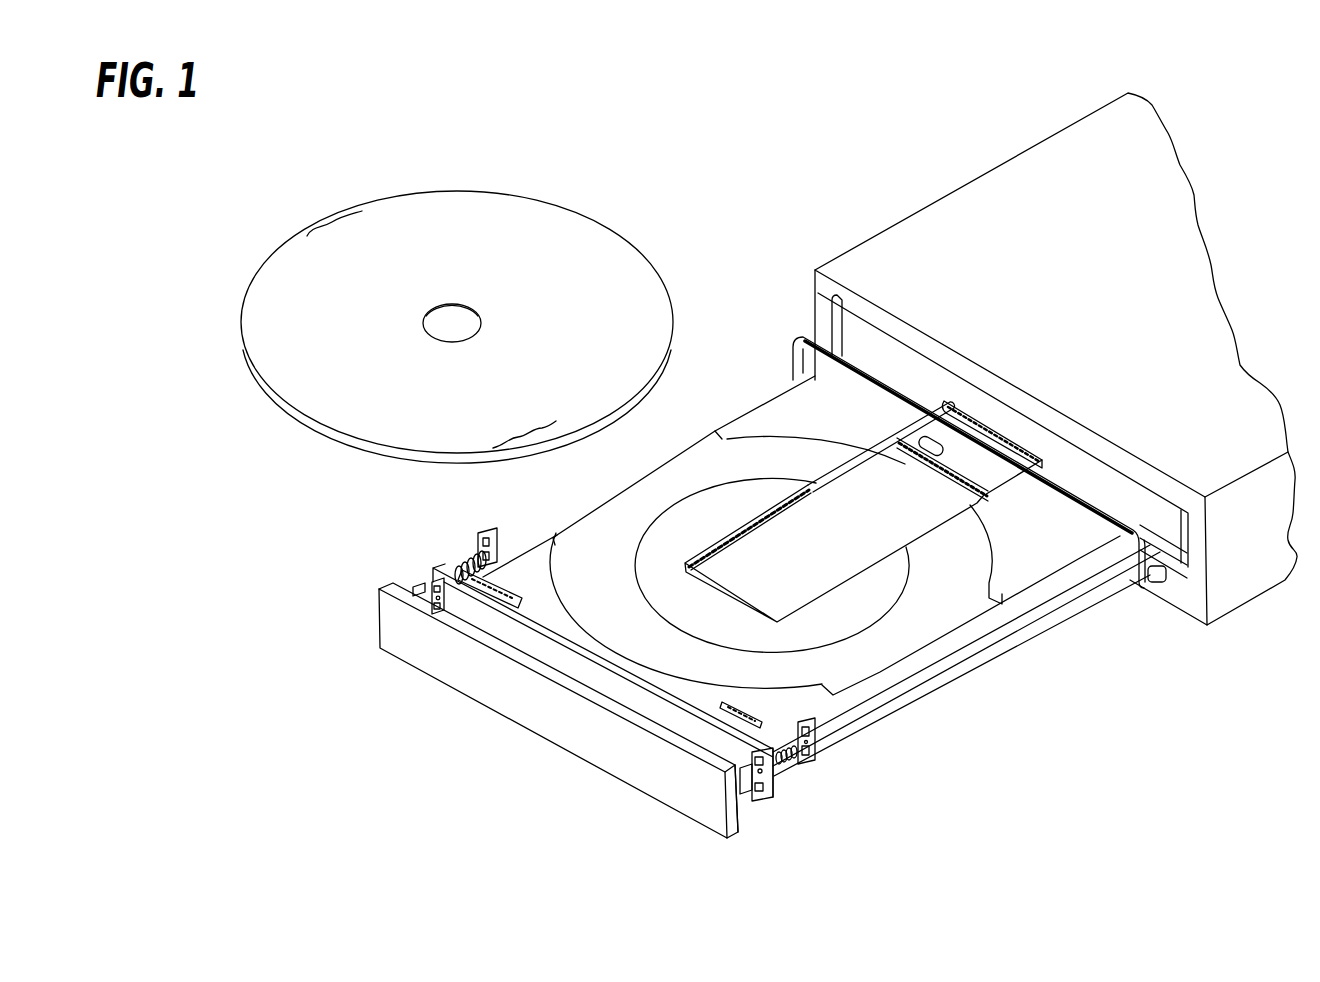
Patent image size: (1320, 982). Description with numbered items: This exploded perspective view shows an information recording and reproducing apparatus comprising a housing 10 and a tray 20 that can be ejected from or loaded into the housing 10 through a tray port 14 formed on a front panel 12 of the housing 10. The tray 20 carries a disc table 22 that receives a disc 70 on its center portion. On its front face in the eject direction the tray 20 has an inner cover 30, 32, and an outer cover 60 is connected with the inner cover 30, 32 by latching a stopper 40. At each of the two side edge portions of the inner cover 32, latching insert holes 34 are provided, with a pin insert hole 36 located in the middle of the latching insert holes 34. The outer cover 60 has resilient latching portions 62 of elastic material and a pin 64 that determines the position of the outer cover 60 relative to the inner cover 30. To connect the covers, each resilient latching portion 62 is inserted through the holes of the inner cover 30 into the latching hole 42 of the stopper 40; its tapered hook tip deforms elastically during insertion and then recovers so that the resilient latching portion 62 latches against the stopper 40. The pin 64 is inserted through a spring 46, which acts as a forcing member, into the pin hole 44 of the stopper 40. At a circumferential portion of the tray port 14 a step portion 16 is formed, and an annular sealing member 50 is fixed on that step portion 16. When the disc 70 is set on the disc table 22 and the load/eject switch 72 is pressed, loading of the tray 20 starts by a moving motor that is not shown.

The housing 10 is at (993, 196).
The front panel 12 is at (1190, 612).
The tray port 14 is at (862, 321).
The step portion 16 is at (1178, 563).
The tray 20 is at (722, 414).
The disc table 22 is at (672, 472).
The inner cover 30 is at (567, 670).
The inner cover 32 is at (440, 573).
The latching insert holes 34 is at (428, 583).
The pin insert hole 36 is at (433, 606).
The stopper 40 is at (489, 532).
The latching hole 42 is at (830, 722).
The pin hole 44 is at (497, 572).
The spring 46 is at (468, 562).
The annular sealing member 50 is at (793, 345).
The outer cover 60 is at (556, 726).
The resilient latching portion 62 is at (413, 590).
The pin 64 is at (722, 812).
The disc 70 is at (528, 215).
The load/eject switch 72 is at (1146, 588).